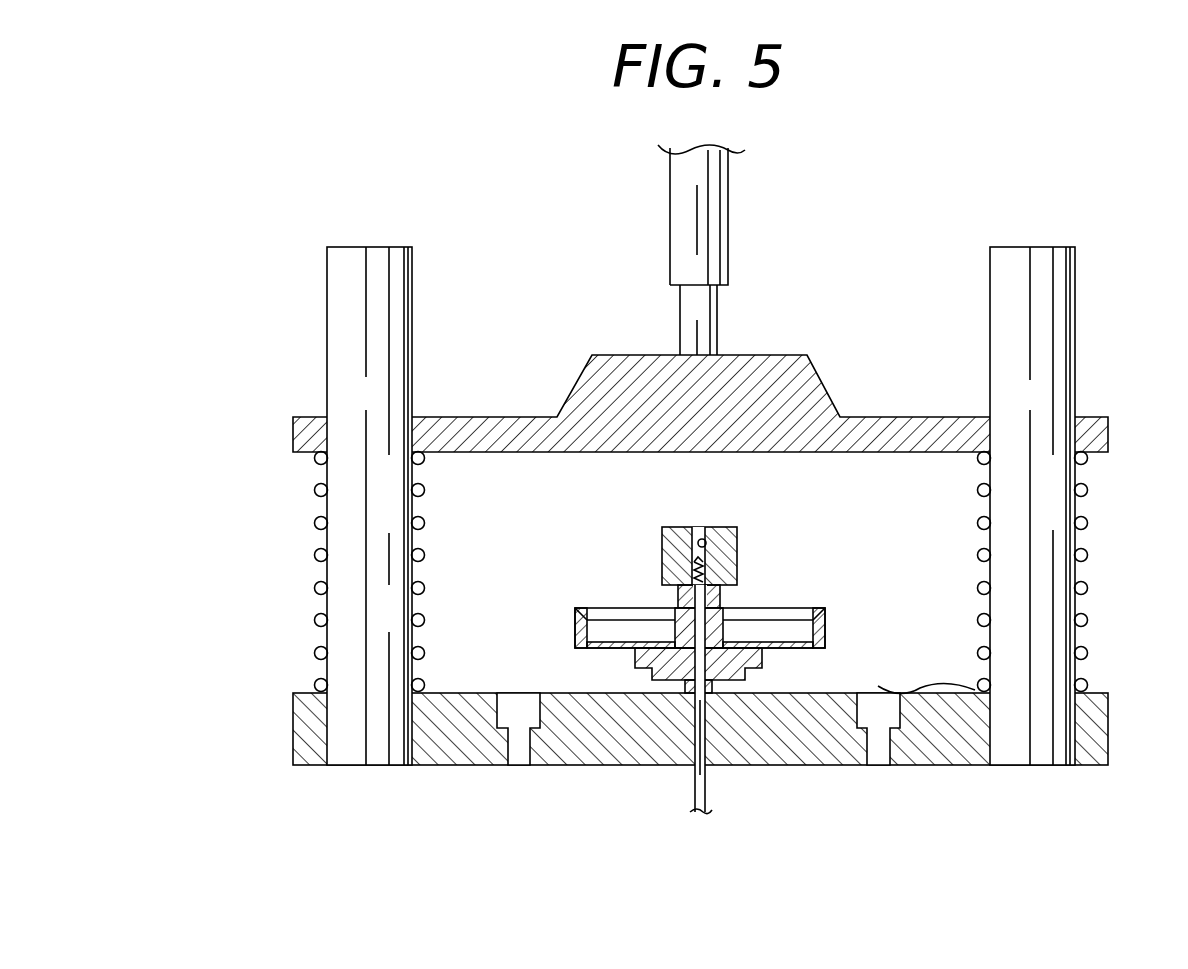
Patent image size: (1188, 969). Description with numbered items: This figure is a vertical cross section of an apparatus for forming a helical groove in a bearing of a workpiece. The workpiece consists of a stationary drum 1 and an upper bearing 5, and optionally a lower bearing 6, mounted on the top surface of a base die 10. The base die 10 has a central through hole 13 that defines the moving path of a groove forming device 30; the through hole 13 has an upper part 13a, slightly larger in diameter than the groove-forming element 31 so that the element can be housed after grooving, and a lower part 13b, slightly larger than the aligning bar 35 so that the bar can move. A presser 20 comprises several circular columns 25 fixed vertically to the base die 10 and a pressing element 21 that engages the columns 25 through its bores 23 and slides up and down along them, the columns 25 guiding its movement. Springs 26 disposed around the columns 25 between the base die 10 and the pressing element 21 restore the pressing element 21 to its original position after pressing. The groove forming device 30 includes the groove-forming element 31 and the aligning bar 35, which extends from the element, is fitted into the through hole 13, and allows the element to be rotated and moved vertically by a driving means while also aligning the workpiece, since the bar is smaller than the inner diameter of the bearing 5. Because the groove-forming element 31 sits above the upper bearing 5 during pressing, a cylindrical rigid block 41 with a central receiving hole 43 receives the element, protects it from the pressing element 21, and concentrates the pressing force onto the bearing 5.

The stationary drum 1 is at (580, 628).
The upper bearing 5 is at (665, 592).
The lower bearing 6 is at (683, 690).
The base die 10 is at (300, 728).
The through hole 13 is at (698, 788).
The upper part 13a is at (693, 703).
The lower part 13b is at (693, 762).
The presser 20 is at (180, 413).
The pressing element 21 is at (300, 433).
The bores 23 is at (1072, 432).
The columns 25 is at (348, 585).
The springs 26 is at (320, 523).
The groove forming device 30 is at (665, 696).
The groove-forming element 31 is at (728, 583).
The aligning bar 35 is at (734, 834).
The rigid block 41 is at (737, 565).
The receiving hole 43 is at (706, 543).